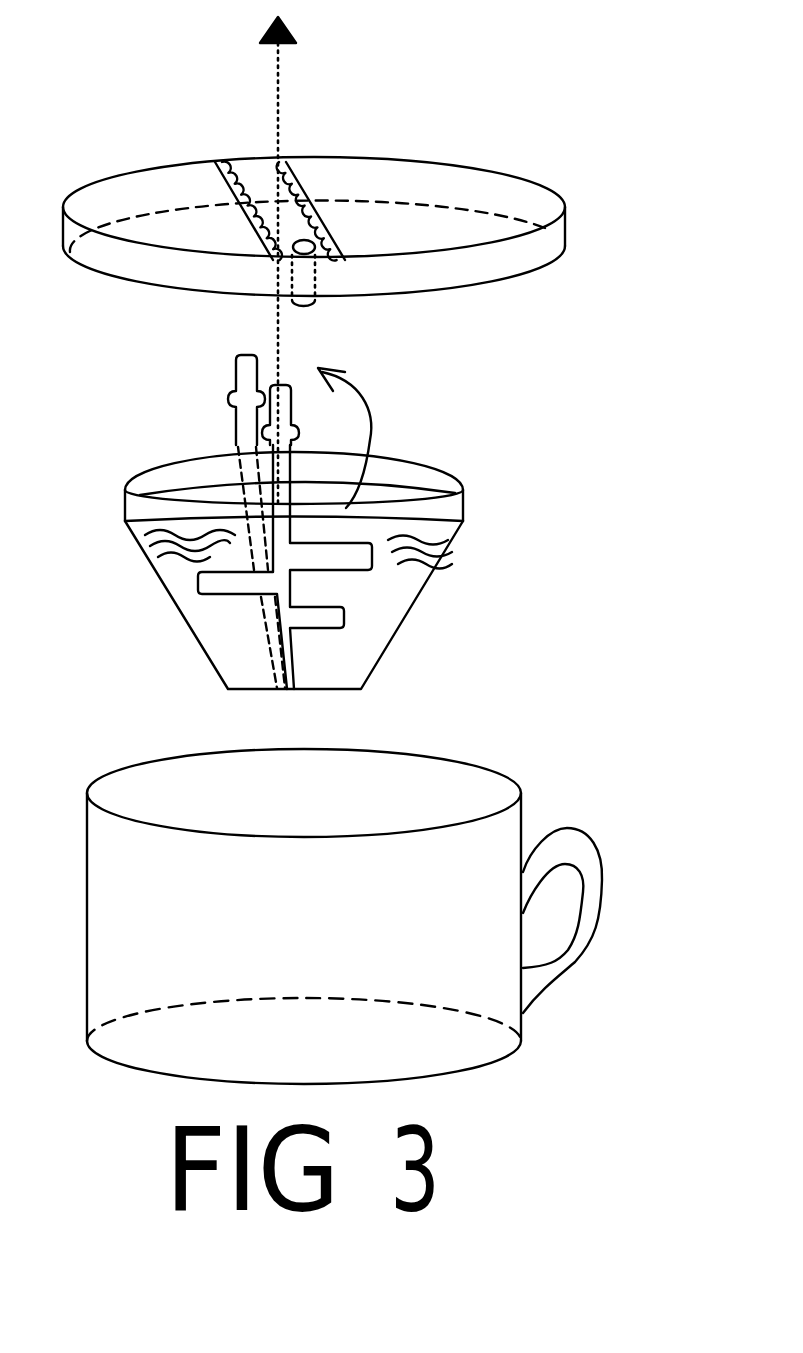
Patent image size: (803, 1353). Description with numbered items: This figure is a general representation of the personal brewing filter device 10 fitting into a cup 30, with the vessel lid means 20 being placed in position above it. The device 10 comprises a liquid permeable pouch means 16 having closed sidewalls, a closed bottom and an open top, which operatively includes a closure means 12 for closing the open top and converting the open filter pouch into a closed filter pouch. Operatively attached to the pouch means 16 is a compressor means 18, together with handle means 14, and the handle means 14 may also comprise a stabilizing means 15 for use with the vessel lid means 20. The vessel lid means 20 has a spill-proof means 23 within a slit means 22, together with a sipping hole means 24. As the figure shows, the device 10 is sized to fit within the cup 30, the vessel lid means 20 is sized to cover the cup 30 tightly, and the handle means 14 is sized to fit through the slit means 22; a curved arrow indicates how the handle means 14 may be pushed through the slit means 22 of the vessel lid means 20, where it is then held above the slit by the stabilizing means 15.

The personal brewing filter device 10 is at (353, 519).
The closure means 12 is at (465, 504).
The handle means 14 is at (247, 377).
The stabilizing means 15 is at (350, 537).
The liquid permeable pouch means 16 is at (150, 541).
The compressor means 18 is at (273, 585).
The vessel lid means 20 is at (384, 197).
The slit means 22 is at (280, 218).
The spill-proof means 23 is at (303, 202).
The sipping hole means 24 is at (307, 273).
The cup 30 is at (523, 819).